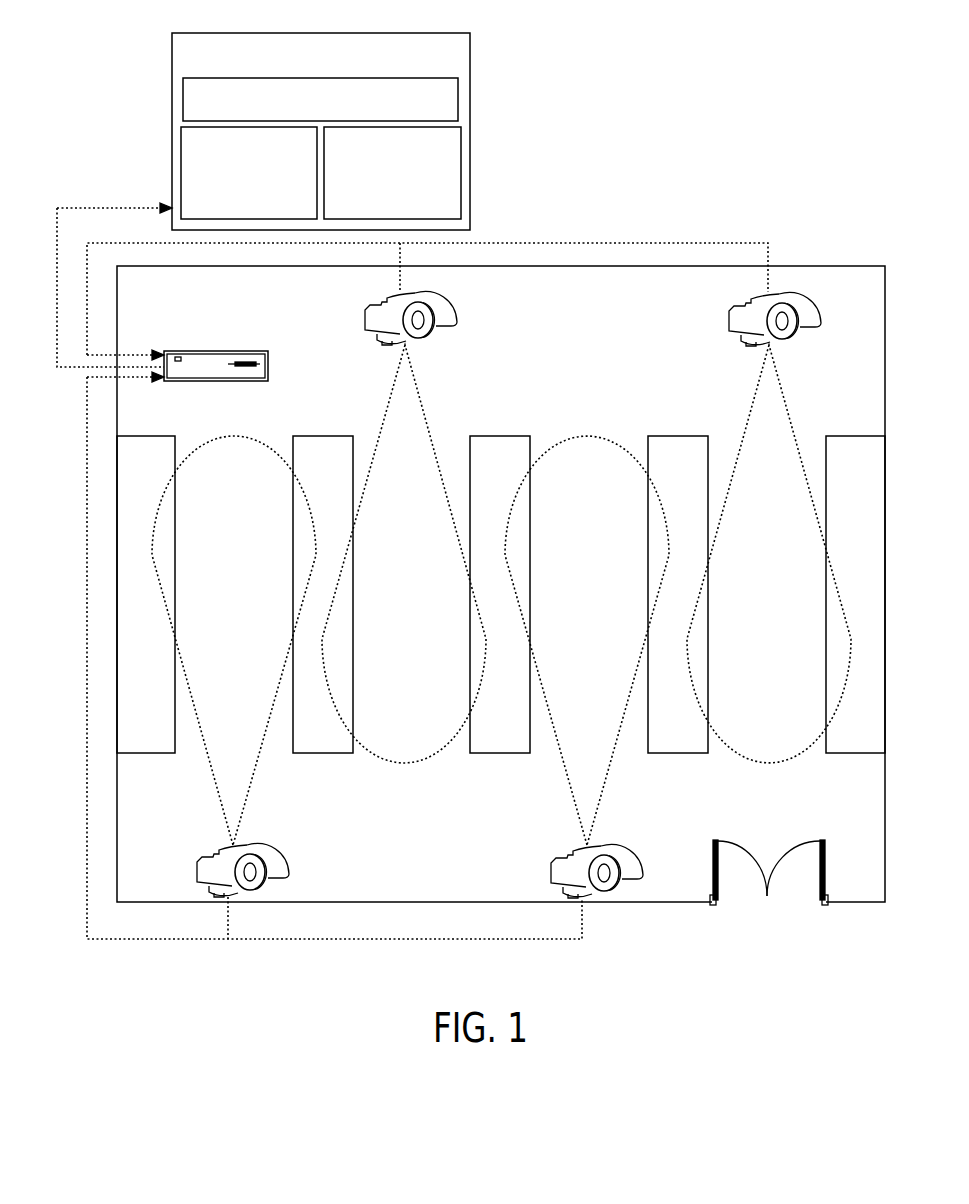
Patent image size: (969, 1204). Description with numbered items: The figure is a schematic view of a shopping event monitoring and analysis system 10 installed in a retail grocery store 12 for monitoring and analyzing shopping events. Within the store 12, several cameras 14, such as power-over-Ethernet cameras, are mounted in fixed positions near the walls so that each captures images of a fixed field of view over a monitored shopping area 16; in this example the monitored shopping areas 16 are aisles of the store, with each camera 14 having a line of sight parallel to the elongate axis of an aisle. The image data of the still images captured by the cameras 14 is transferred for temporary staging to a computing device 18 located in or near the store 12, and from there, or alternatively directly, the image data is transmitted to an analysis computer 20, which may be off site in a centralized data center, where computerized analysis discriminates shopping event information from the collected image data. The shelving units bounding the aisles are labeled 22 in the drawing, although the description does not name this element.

The shopping event monitoring and analysis system 10 is at (766, 142).
The retail grocery store 12 is at (673, 265).
The camera 14 is at (815, 306).
The monitored shopping area 16 is at (248, 712).
The computing device 18 is at (219, 350).
The analysis computer 20 is at (333, 32).
The shelves / displays 22 is at (502, 437).